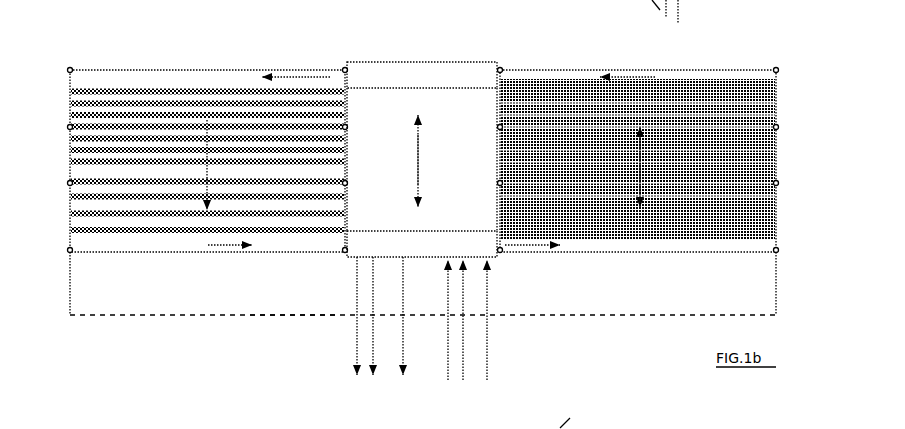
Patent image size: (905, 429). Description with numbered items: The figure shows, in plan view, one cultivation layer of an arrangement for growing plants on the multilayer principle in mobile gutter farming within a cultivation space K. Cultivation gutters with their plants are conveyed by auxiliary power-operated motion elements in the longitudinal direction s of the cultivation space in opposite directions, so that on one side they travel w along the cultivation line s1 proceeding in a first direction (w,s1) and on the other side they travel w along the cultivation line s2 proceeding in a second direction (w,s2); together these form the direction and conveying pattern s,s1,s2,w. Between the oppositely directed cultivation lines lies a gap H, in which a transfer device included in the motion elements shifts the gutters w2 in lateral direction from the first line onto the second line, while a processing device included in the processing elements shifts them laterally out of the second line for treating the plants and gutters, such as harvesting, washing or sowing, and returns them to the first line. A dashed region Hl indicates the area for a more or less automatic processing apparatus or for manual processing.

The conveying along second cultivation line w,s2 is at (200, 152).
The lateral shifting of cultivation gutters w2 is at (303, 68).
The longitudinal direction of cultivation space s is at (427, 156).
The conveying along first cultivation line w,s1 is at (644, 152).
The gap H is at (391, 162).
The laying region height Hl is at (108, 320).
The cultivation space K is at (283, 278).
The longitudinal direction, cultivation lines and conveying s,s1,s2,w is at (593, 416).